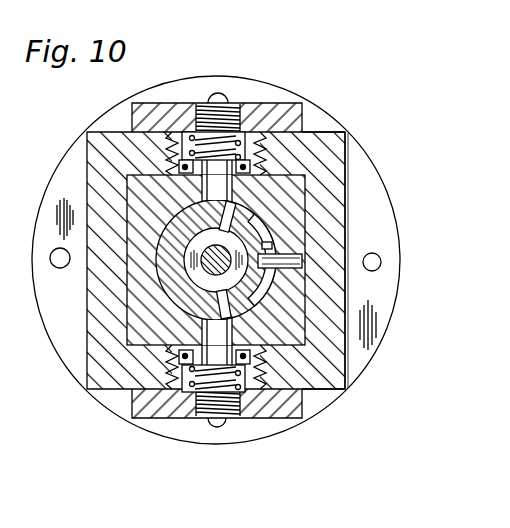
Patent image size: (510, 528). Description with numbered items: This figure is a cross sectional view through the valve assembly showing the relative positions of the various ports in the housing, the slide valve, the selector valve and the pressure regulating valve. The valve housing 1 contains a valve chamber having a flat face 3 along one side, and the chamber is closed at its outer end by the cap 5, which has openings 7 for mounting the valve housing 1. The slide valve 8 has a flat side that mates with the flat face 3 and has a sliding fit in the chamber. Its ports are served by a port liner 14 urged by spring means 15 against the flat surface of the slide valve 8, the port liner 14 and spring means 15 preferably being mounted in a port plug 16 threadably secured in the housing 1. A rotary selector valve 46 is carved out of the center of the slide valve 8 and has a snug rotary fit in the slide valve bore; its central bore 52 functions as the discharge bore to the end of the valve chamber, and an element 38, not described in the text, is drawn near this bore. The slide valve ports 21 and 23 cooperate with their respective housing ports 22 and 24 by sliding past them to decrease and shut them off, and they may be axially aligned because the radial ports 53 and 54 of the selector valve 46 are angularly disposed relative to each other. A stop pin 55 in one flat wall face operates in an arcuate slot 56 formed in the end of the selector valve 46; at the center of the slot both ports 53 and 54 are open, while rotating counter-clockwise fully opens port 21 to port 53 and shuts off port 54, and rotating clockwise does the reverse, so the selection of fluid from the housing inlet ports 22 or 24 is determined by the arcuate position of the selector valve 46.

The valve housing 1 is at (100, 370).
The flat face 3 is at (140, 343).
The cap 5 is at (48, 180).
The openings 7 is at (381, 263).
The slide valve 8 is at (187, 298).
The port liner 14 is at (335, 393).
The spring means 15 is at (246, 388).
The port plug 16 is at (301, 423).
The slide valve port 21 is at (225, 175).
The housing port 22 is at (213, 180).
The slide valve port 23 is at (220, 337).
The housing port 24 is at (223, 337).
The shaft 38 is at (203, 253).
The rotary selector valve 46 is at (180, 220).
The central bore 52 is at (192, 275).
The radial port 53 is at (234, 218).
The radial port 54 is at (243, 310).
The stop pin 55 is at (300, 260).
The arcuate slot 56 is at (266, 246).